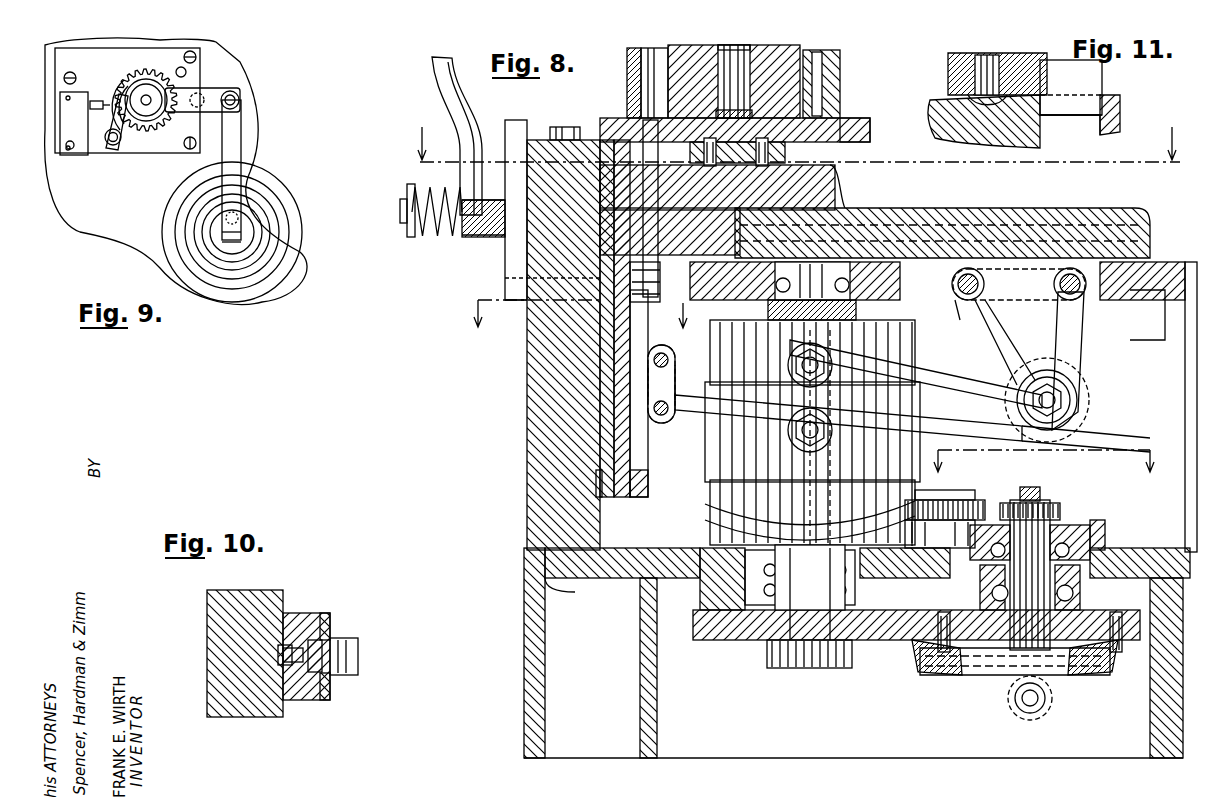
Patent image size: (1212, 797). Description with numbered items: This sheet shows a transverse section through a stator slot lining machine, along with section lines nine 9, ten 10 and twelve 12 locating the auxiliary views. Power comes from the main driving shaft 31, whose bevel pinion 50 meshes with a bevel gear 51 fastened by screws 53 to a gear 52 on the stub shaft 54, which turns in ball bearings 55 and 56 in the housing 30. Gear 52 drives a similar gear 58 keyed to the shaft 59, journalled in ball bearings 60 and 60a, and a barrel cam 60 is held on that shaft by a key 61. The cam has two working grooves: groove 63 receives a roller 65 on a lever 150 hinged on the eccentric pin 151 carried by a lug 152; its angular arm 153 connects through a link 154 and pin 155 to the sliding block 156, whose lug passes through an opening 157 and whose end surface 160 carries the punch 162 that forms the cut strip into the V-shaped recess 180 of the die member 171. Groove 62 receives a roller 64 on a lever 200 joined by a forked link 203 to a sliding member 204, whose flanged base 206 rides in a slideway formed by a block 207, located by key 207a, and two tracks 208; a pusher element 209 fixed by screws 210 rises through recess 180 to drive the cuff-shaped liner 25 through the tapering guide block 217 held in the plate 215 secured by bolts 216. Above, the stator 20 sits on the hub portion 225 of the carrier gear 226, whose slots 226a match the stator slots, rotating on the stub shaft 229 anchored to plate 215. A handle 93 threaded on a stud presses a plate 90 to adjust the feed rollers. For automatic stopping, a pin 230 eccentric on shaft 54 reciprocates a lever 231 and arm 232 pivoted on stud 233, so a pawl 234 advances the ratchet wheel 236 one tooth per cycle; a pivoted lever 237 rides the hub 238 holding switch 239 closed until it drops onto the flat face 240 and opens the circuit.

In FIG. 8, the section line 9— 9 is at (1044, 469).
In FIG. 8, the section line 10— 10 is at (587, 326).
In FIG. 8, the section line 12— 12 is at (796, 133).
In FIG. 11, the stator 20 is at (962, 72).
In FIG. 11, the cuff-shaped liner 25 is at (1048, 82).
In FIG. 10, the housing 30 is at (215, 605).
In FIG. 8, the housing 30 is at (545, 507).
In FIG. 8, the main driving shaft 31 is at (1026, 704).
In FIG. 8, the bevel pinion 50 is at (1045, 718).
In FIG. 8, the bevel gear 51 is at (1112, 676).
In FIG. 8, the gear 52 is at (992, 672).
In FIG. 8, the screws 53 is at (962, 674).
In FIG. 9, the stub shaft 54 is at (254, 240).
In FIG. 8, the stub shaft 54 is at (1040, 568).
In FIG. 8, the ball bearing 55 is at (1075, 592).
In FIG. 8, the ball bearing 56 is at (1098, 528).
In FIG. 8, the gear 58 is at (895, 640).
In FIG. 8, the shaft 59 is at (810, 670).
In FIG. 8, the barrel cam 60 is at (730, 452).
In FIG. 8, the ball bearing 60a is at (852, 288).
In FIG. 8, the key 61 is at (825, 492).
In FIG. 8, the working groove 62 is at (730, 508).
In FIG. 8, the working groove 63 is at (770, 350).
In FIG. 8, the roller 64 is at (835, 432).
In FIG. 8, the roller 65 is at (835, 366).
In FIG. 8, the plate 90 is at (514, 302).
In FIG. 8, the handle 93 is at (460, 236).
In FIG. 8, the lever 150 is at (965, 400).
In FIG. 8, the pin 151 is at (1050, 400).
In FIG. 8, the lug 152 is at (1092, 368).
In FIG. 8, the angular arm 153 is at (1060, 346).
In FIG. 8, the link 154 is at (1027, 300).
In FIG. 8, the pin 155 is at (980, 284).
In FIG. 8, the sliding block 156 is at (1052, 225).
In FIG. 8, the opening 157 is at (935, 292).
In FIG. 8, the end surface 160 is at (770, 184).
In FIG. 8, the punch 162 is at (845, 186).
In FIG. 8, the die member 171 is at (560, 205).
In FIG. 8, the V-shaped recess 180 is at (700, 212).
In FIG. 8, the lever 200 is at (978, 418).
In FIG. 8, the forked link 203 is at (666, 392).
In FIG. 10, the sliding member 204 is at (352, 652).
In FIG. 8, the sliding member 204 is at (665, 358).
In FIG. 10, the flanged base 206 is at (311, 616).
In FIG. 10, the block 207 is at (296, 700).
In FIG. 8, the block 207 is at (622, 497).
In FIG. 10, the locating key 207a is at (290, 656).
In FIG. 8, the locating key 207a is at (600, 470).
In FIG. 10, the tracks 208 is at (332, 618).
In FIG. 8, the tracks 208 is at (648, 490).
In FIG. 10, the pusher element 209 is at (358, 656).
In FIG. 8, the pusher element 209 is at (620, 215).
In FIG. 8, the screws 210 is at (655, 296).
In FIG. 8, the plate 215 is at (786, 153).
In FIG. 8, the bolts 216 is at (568, 128).
In FIG. 8, the guide block 217 is at (605, 165).
In FIG. 8, the hub portion 225 is at (695, 62).
In FIG. 11, the gear 226 is at (1112, 130).
In FIG. 8, the gear 226 is at (845, 128).
In FIG. 11, the slots 226a is at (1070, 135).
In FIG. 8, the slots 226a is at (858, 140).
In FIG. 8, the stub shaft 229 is at (740, 84).
In FIG. 9, the pin 230 is at (232, 246).
In FIG. 8, the pin 230 is at (650, 102).
In FIG. 9, the lever 231 is at (234, 182).
In FIG. 8, the lever 231 is at (1042, 494).
In FIG. 9, the arm 232 is at (212, 96).
In FIG. 8, the arm 232 is at (985, 490).
In FIG. 9, the stud 233 is at (146, 108).
In FIG. 9, the pawl 234 is at (188, 78).
In FIG. 9, the ratchet wheel 236 is at (160, 126).
In FIG. 8, the ratchet wheel 236 is at (950, 498).
In FIG. 9, the pivoted lever 237 is at (111, 122).
In FIG. 8, the pivoted lever 237 is at (930, 525).
In FIG. 9, the hub 238 is at (123, 86).
In FIG. 9, the switch 239 is at (72, 158).
In FIG. 9, the flat face 240 is at (122, 152).